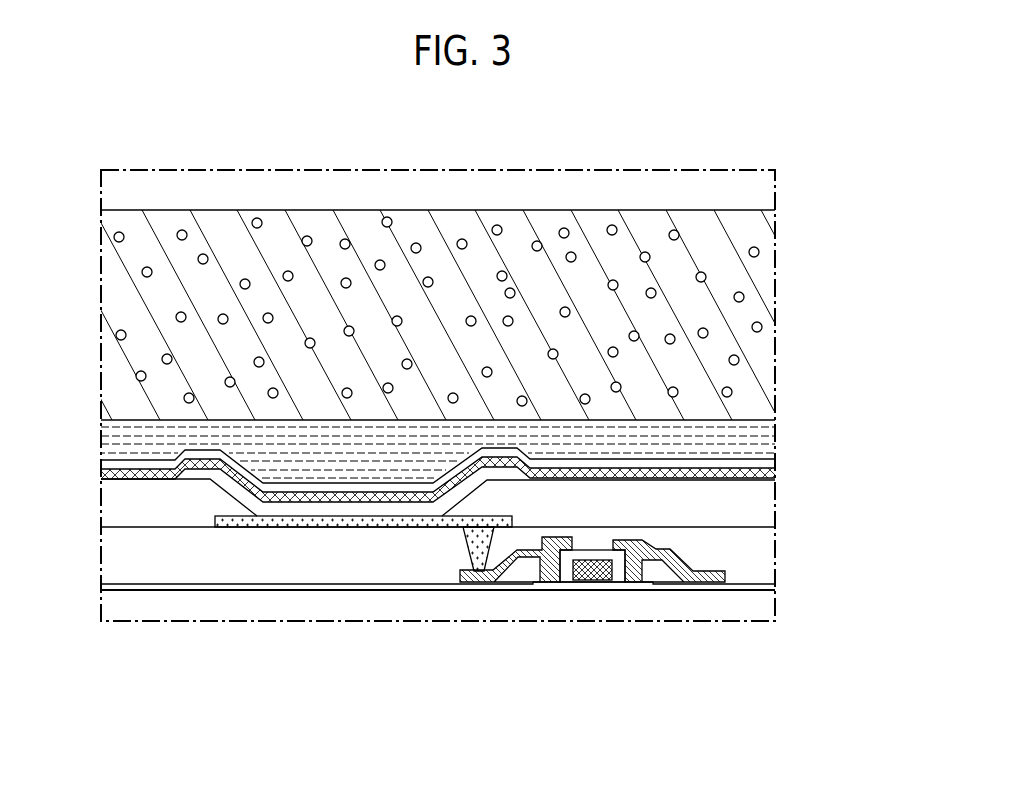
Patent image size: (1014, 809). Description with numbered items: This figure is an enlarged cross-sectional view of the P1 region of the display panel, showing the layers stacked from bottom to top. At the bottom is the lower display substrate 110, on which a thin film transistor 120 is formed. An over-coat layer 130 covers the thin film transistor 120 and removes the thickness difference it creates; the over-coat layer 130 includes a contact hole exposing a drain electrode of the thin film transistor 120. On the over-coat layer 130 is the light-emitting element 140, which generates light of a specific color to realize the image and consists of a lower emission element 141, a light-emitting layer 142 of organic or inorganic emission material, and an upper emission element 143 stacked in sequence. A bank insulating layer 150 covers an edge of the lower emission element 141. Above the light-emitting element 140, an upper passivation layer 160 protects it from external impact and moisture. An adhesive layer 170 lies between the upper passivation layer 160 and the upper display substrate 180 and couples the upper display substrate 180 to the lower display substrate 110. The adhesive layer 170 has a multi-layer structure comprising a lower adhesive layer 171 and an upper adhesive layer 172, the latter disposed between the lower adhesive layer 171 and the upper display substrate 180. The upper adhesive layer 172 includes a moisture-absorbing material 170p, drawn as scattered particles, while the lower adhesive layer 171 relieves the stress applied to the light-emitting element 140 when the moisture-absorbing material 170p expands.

The P1 region P1 is at (118, 170).
The lower display substrate 110 is at (766, 603).
The thin film transistor 120 is at (581, 595).
The over-coat layer 130 is at (766, 547).
The light-emitting element 140 is at (438, 600).
The lower emission element 141 is at (347, 520).
The light-emitting layer 142 is at (307, 510).
The upper emission element 143 is at (237, 478).
The bank insulating layer 150 is at (766, 499).
The upper passivation layer 160 is at (115, 461).
The adhesive layer 170 is at (453, 344).
The moisture-absorbing material 170p is at (158, 354).
The lower adhesive layer 171 is at (471, 452).
The upper adhesive layer 172 is at (437, 315).
The upper display substrate 180 is at (765, 188).